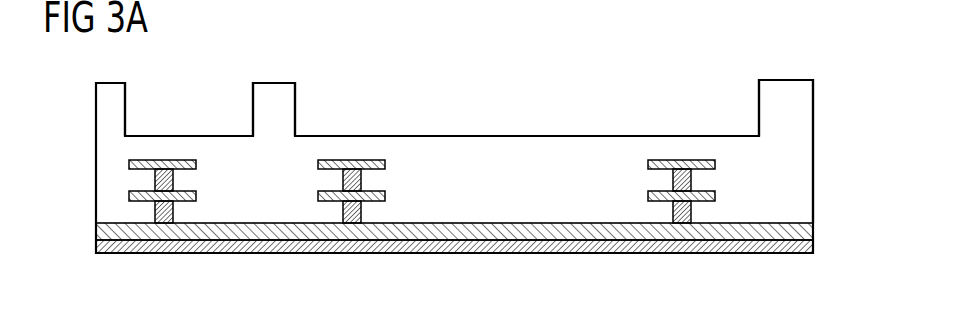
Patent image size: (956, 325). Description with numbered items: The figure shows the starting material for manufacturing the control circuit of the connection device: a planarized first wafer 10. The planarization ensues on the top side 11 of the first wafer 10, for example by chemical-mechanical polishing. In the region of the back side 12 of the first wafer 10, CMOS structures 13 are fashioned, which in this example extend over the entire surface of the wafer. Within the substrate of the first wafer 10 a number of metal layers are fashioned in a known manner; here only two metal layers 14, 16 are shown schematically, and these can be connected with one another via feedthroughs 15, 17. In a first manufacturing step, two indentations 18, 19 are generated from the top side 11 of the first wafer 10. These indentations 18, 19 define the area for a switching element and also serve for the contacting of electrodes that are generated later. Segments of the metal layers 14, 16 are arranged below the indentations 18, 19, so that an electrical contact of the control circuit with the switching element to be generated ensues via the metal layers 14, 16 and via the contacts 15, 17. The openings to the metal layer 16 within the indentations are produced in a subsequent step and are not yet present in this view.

The first wafer 10 is at (78, 125).
The top side 11 is at (785, 77).
The back side 12 is at (785, 256).
The CMOS structures 13 is at (813, 229).
The metal layer 14 is at (196, 196).
The feedthrough 15 is at (155, 217).
The metal layer 16 is at (196, 167).
The feedthrough 17 is at (155, 185).
The indentation 18 is at (125, 110).
The indentation 19 is at (295, 110).